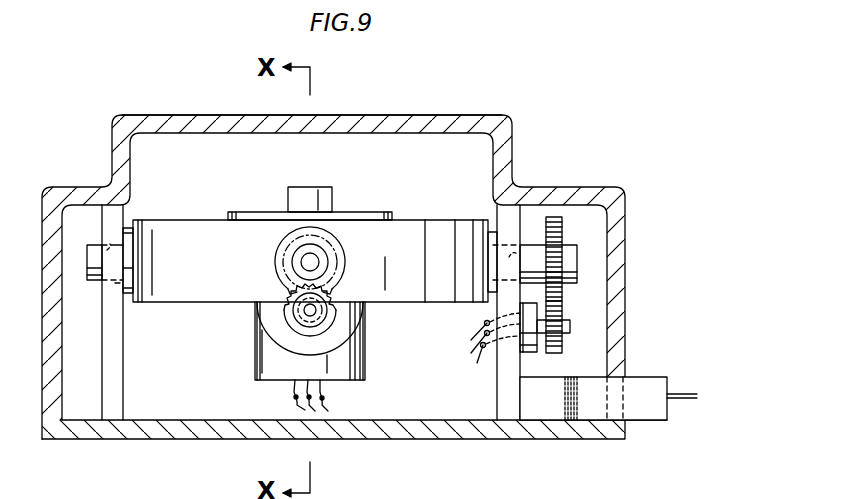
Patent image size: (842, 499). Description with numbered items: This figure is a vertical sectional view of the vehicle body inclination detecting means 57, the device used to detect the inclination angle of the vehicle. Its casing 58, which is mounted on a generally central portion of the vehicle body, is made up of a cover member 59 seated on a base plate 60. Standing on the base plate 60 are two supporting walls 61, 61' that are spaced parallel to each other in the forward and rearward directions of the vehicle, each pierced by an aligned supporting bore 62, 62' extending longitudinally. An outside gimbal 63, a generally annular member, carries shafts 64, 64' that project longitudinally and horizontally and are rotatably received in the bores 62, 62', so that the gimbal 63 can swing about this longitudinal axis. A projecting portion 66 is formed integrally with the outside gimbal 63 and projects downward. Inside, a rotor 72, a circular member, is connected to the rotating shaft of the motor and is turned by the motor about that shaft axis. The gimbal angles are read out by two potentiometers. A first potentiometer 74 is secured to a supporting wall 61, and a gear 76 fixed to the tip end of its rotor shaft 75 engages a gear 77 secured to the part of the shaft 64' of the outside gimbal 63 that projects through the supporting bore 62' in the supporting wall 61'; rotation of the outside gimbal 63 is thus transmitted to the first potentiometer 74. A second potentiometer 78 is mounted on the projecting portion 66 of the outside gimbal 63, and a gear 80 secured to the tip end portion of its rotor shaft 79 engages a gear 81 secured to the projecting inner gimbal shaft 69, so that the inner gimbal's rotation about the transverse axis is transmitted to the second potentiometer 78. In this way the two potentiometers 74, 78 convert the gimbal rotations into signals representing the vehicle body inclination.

The vehicle body inclination detecting means 57 is at (586, 95).
The casing 58 is at (502, 118).
The cover member 59 is at (386, 116).
The base plate 60 is at (462, 439).
The supporting wall 61 is at (144, 312).
The supporting wall 61' is at (480, 312).
The supporting bore 62 is at (87, 208).
The supporting bore 62' is at (540, 206).
The outside gimbal 63 is at (187, 220).
The shaft 64 is at (87, 288).
The shaft 64' is at (604, 253).
The projecting portion 66 is at (290, 342).
The large gear 69 is at (293, 254).
The rotor 72 is at (372, 212).
The first potentiometer 74 is at (528, 341).
The rotor shaft 75 is at (571, 324).
The gear 76 is at (563, 346).
The gear 77 is at (556, 217).
The second potentiometer 78 is at (295, 306).
The rotor shaft 79 is at (306, 312).
The gear 80 is at (326, 318).
The gear 81 is at (342, 244).